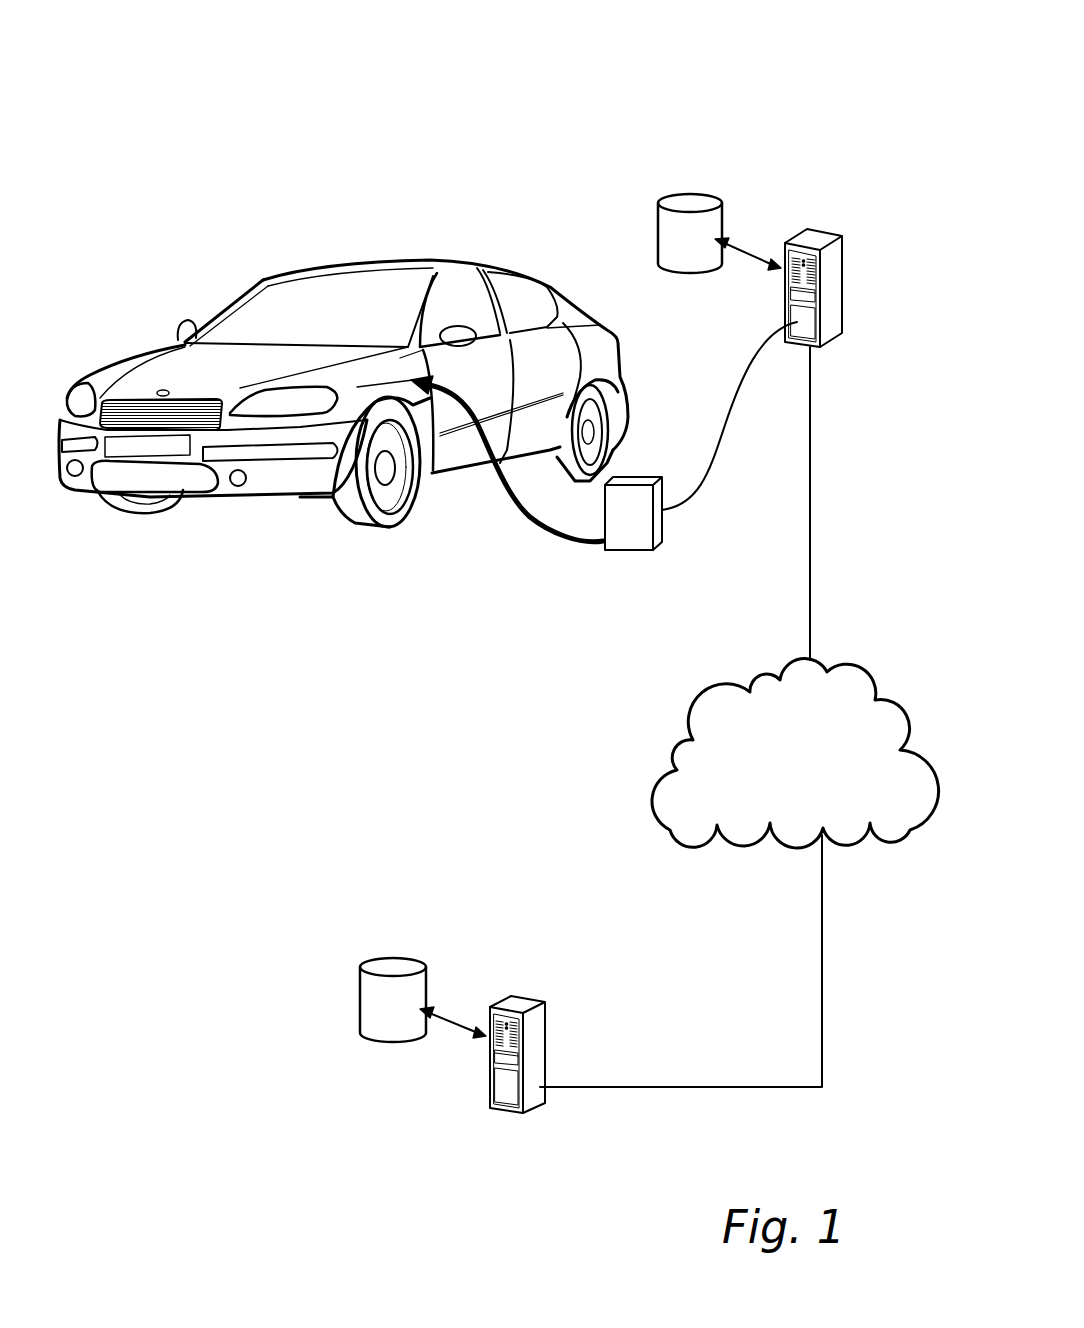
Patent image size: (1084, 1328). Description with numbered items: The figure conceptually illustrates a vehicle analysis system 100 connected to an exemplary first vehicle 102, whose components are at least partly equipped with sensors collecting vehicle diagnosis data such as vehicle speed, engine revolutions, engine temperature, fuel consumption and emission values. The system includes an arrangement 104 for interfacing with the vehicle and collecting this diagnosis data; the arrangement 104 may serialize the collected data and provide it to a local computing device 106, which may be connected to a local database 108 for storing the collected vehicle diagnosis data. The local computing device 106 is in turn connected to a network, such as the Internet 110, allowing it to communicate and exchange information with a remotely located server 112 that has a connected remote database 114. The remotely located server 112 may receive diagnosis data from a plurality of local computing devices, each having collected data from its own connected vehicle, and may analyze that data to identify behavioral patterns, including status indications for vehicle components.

The vehicle analysis system 100 is at (797, 56).
The first vehicle 102 is at (398, 262).
The arrangement 104 is at (633, 540).
The local computing device 106 is at (833, 289).
The local database 108 is at (682, 198).
The Internet 110 is at (685, 754).
The remotely located server 112 is at (537, 1047).
The remote database 114 is at (387, 962).